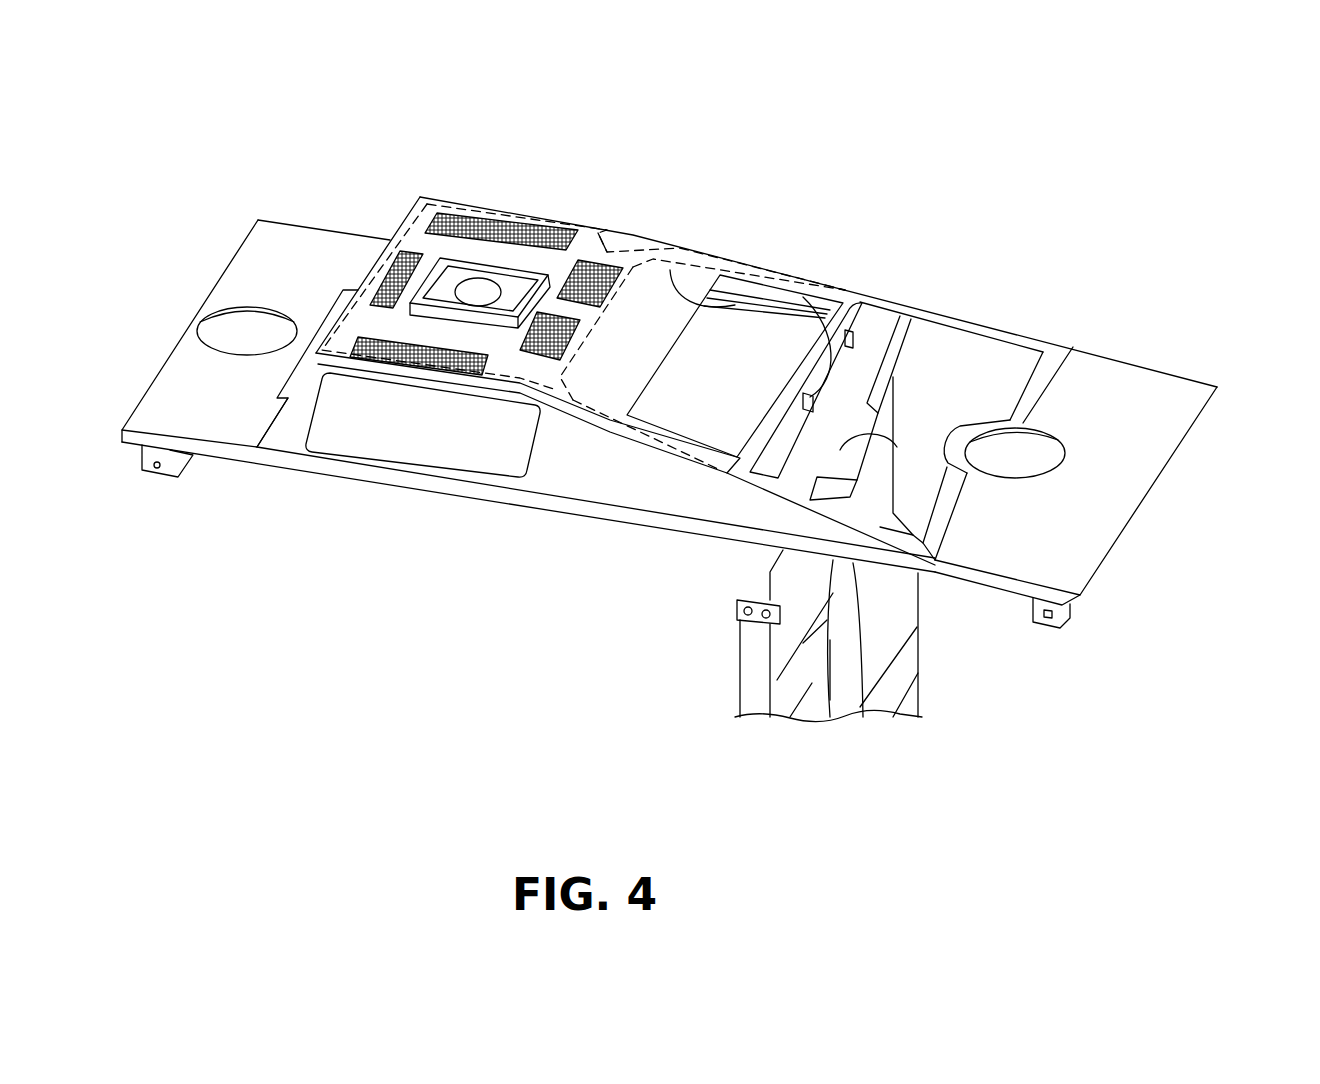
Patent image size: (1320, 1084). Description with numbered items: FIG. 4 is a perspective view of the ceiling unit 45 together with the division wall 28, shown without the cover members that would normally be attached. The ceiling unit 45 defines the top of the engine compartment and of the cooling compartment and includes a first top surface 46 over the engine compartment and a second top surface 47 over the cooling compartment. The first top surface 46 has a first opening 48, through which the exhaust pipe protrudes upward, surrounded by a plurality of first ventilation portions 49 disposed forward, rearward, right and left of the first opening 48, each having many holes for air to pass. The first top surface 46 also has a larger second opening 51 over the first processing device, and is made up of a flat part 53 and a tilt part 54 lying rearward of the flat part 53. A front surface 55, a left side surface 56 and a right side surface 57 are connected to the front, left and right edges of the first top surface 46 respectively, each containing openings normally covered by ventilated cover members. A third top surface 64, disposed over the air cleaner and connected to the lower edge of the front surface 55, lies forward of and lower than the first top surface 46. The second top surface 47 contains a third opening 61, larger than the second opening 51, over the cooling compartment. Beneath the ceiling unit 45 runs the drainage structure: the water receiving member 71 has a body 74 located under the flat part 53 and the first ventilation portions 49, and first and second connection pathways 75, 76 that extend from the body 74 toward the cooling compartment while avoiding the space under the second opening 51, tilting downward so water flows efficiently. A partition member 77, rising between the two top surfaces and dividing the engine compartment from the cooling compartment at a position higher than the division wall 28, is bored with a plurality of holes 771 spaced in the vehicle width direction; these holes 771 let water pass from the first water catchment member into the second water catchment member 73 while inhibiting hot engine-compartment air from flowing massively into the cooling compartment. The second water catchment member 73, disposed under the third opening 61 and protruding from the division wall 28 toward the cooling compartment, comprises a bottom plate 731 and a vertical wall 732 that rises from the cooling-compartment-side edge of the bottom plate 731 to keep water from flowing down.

The ceiling unit 45 is at (975, 172).
The first top surface 46 is at (557, 196).
The second top surface 47 is at (1042, 388).
The first opening 48 is at (478, 306).
The first ventilation portions 49 is at (398, 252).
The second opening 51 is at (737, 310).
The flat part 53 is at (432, 225).
The tilt part 54 is at (670, 287).
The front surface 55 is at (395, 287).
The left side surface 56 is at (567, 463).
The right side surface 57 is at (698, 280).
The third opening 61 is at (1012, 323).
The third top surface 64 is at (292, 270).
The water receiving member 71 is at (621, 247).
The second water catchment member 73 is at (896, 427).
The body 74 is at (470, 210).
The first connection pathway 75 is at (776, 268).
The second connection pathway 76 is at (668, 462).
The partition member 77 is at (803, 297).
The division wall 28 is at (830, 700).
The bottom plate 731 is at (900, 440).
The vertical wall 732 is at (893, 378).
The holes 771 is at (877, 298).